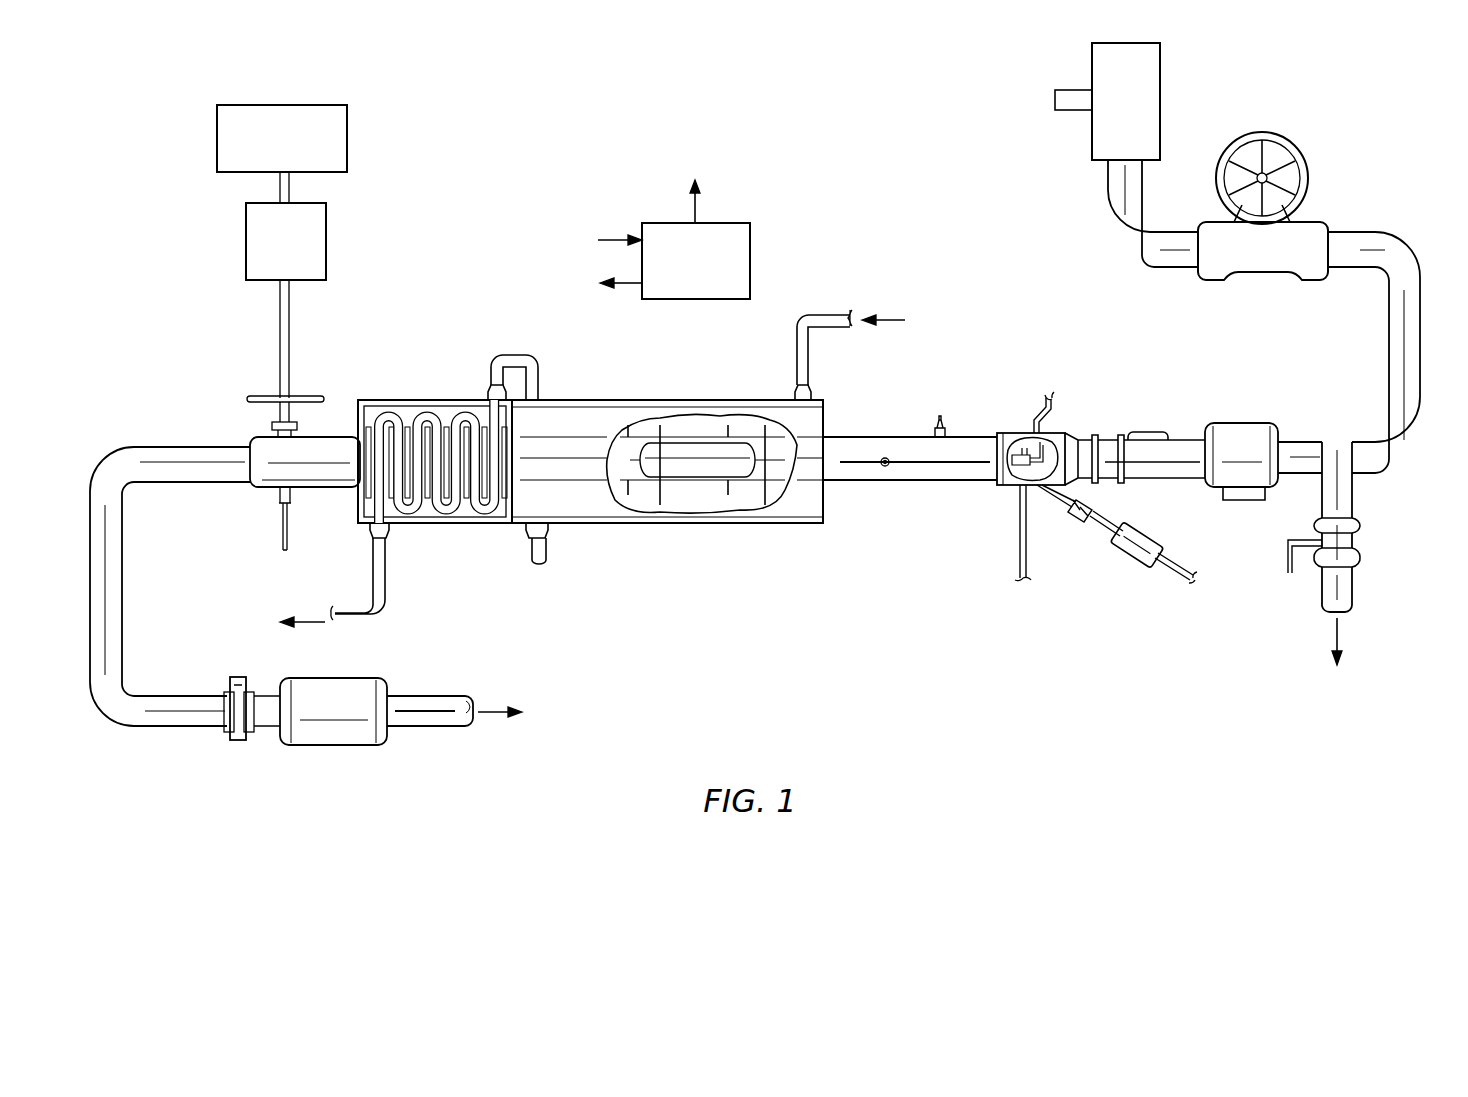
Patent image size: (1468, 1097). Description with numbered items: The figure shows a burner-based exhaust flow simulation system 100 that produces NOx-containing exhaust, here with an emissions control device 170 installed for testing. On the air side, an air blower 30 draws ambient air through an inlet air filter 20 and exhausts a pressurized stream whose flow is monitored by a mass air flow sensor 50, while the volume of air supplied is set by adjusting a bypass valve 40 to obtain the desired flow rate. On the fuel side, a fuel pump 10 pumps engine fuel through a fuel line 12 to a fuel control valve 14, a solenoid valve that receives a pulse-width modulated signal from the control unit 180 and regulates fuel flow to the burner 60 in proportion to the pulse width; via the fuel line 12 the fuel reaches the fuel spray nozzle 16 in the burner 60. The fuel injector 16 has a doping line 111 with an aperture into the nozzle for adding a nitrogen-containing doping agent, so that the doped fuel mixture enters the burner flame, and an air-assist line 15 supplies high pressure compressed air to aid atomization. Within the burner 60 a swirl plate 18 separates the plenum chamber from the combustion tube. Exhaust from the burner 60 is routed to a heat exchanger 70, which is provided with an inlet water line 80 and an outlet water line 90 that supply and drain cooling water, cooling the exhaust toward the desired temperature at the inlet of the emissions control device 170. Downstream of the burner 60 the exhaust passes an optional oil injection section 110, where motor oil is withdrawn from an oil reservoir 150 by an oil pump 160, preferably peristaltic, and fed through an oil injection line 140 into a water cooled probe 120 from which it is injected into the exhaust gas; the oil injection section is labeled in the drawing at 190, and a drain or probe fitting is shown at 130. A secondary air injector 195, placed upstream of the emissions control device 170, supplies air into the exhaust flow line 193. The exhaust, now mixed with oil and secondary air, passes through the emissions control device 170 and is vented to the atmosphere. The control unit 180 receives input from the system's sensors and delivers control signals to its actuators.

The fuel pump 10 is at (1133, 560).
The fuel line 12 is at (1112, 528).
The fuel control valve 14 is at (1078, 512).
The air-assist line 15 is at (1053, 415).
The fuel spray nozzle 16 is at (1020, 445).
The swirl plate 18 is at (997, 470).
The inlet air filter 20 is at (1160, 88).
The air blower 30 is at (1318, 222).
The bypass valve 40 is at (1362, 540).
The mass air flow sensor 50 is at (1160, 423).
The burner 60 is at (900, 485).
The heat exchanger 70 is at (613, 525).
The inlet water line 80 is at (797, 355).
The outlet water line 90 is at (386, 600).
The burner-based exhaust flow simulation system 100 is at (1016, 711).
The oil injection section 110 is at (316, 490).
The doping line 111 is at (1020, 545).
The water cooled probe 120 is at (300, 425).
The oil drain 130 is at (283, 522).
The oil injection line 140 is at (289, 332).
The oil reservoir 150 is at (217, 135).
The oil pump 160 is at (246, 243).
The emissions control device 170 is at (330, 750).
The control unit 180 is at (430, 735).
The oil injection section 190 is at (265, 437).
The exhaust flow line 193 is at (160, 735).
The secondary air injector 195 is at (238, 745).